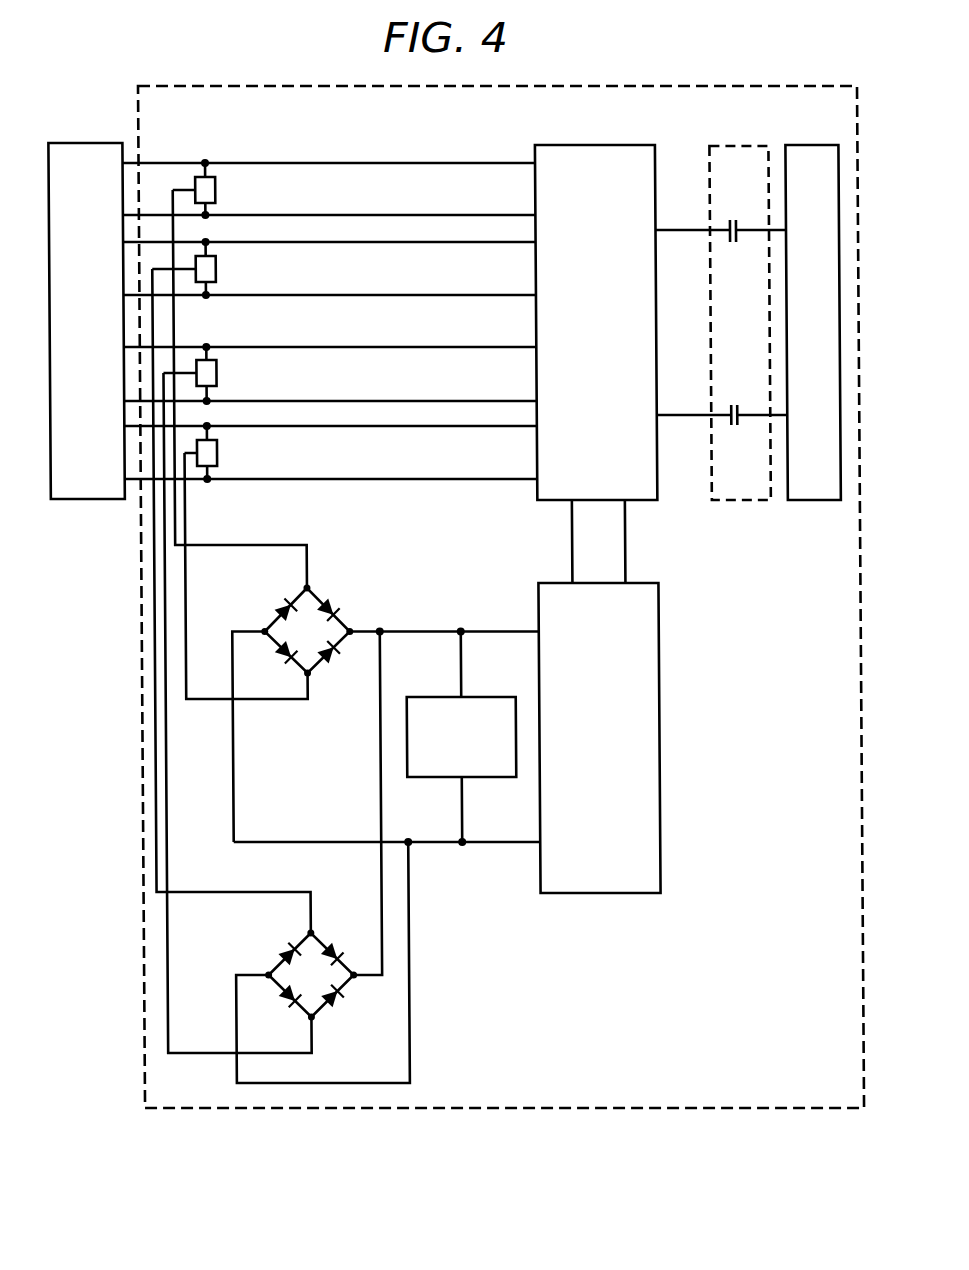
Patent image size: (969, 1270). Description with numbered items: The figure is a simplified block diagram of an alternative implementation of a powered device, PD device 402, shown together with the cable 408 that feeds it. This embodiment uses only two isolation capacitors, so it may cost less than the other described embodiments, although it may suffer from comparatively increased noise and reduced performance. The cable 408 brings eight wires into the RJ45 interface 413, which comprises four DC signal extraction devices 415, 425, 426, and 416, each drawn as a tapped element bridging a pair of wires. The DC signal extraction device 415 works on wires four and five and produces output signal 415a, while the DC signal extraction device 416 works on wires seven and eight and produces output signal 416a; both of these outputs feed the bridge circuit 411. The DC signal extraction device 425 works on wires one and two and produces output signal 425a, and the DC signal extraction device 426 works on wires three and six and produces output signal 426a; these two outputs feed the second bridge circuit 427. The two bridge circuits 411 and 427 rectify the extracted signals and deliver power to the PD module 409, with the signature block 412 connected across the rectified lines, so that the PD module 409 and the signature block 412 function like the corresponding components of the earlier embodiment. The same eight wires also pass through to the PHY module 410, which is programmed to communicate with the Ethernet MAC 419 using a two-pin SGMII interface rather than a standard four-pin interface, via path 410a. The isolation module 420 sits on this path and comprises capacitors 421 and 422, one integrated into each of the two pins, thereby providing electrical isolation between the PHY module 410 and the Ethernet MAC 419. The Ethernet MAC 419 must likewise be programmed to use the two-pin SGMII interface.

The PD device 402 is at (645, 86).
The cable 408 is at (89, 143).
The PD module 409 is at (655, 742).
The PHY module 410 is at (597, 145).
The path 410a is at (682, 238).
The bridge circuit 411 is at (302, 588).
The signature block 412 is at (492, 697).
The RJ45 interface 413 is at (263, 148).
The DC signal extraction device 415 is at (215, 188).
The output signal 415a is at (240, 545).
The DC signal extraction device 416 is at (215, 452).
The output signal 416a is at (203, 704).
The Ethernet MAC 419 is at (812, 145).
The isolation module 420 is at (745, 146).
The capacitor 421 is at (738, 218).
The capacitor 422 is at (738, 428).
The DC signal extraction device 425 is at (215, 267).
The output signal 425a is at (248, 891).
The DC signal extraction device 426 is at (215, 373).
The output signal 426a is at (199, 1053).
The bridge circuit 427 is at (304, 933).